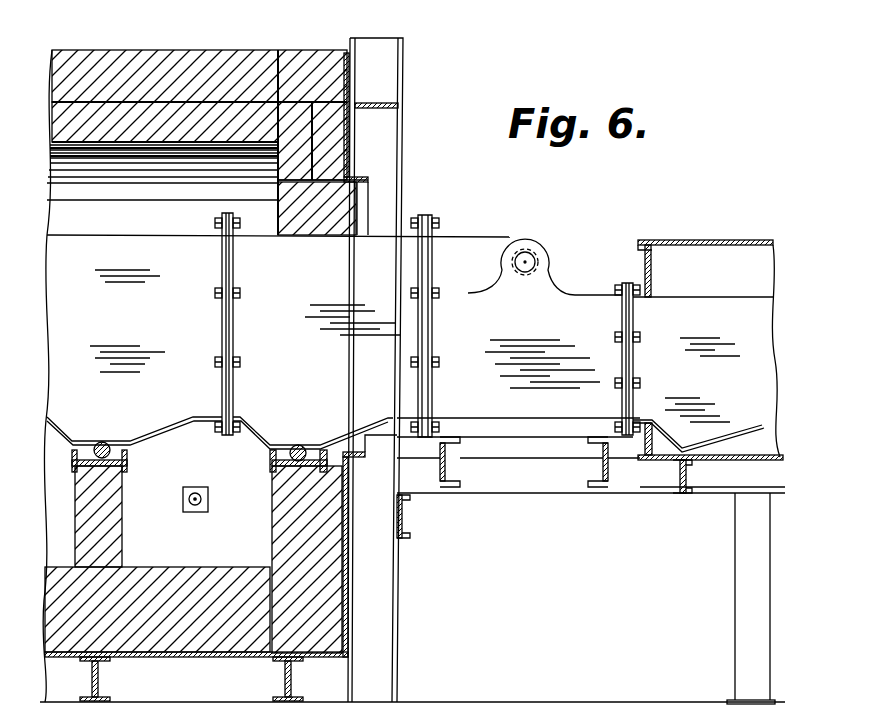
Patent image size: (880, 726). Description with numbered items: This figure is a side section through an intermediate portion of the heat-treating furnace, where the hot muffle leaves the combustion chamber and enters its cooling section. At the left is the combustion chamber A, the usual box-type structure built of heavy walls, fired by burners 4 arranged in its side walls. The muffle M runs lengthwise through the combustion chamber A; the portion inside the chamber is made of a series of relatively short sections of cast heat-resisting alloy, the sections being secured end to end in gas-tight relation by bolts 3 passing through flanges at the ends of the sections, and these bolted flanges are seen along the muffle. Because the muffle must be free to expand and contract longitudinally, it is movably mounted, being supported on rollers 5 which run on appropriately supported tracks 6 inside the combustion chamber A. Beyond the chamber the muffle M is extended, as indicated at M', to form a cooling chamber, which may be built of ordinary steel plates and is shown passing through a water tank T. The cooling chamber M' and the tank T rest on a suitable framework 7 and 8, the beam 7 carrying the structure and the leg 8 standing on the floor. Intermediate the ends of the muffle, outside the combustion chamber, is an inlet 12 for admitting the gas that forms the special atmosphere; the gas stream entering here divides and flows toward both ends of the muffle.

The combustion chamber A is at (90, 50).
The muffle M is at (343, 328).
The muffle extension (cooling chamber) M' is at (703, 352).
The water tank T is at (692, 239).
The bolts 3 is at (234, 296).
The burners 4 is at (195, 493).
The rollers 5 is at (102, 443).
The tracks 6 is at (128, 462).
The framework 7 is at (565, 494).
The framework 8 is at (735, 574).
The inlet 12 is at (533, 255).